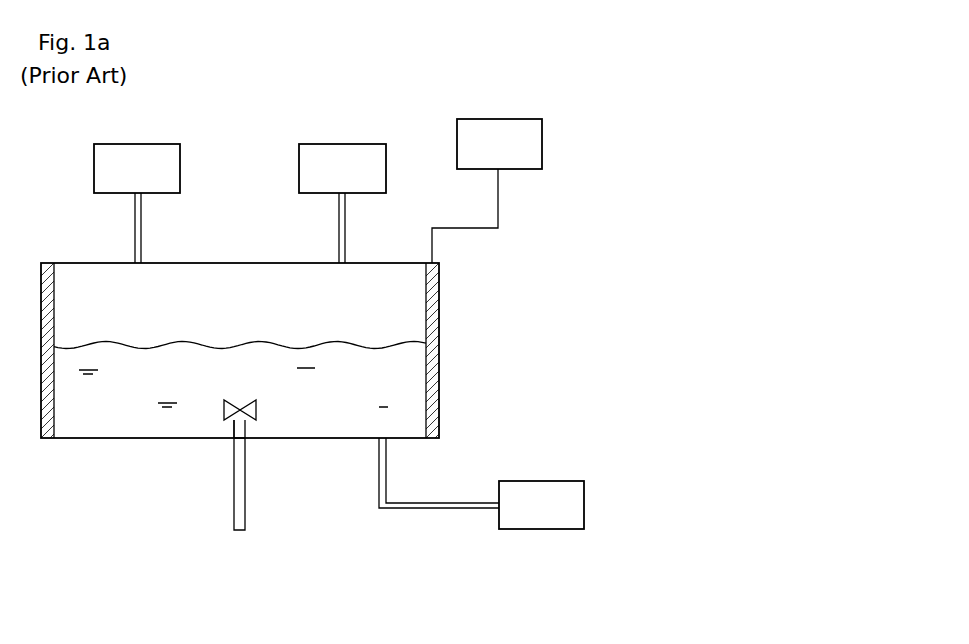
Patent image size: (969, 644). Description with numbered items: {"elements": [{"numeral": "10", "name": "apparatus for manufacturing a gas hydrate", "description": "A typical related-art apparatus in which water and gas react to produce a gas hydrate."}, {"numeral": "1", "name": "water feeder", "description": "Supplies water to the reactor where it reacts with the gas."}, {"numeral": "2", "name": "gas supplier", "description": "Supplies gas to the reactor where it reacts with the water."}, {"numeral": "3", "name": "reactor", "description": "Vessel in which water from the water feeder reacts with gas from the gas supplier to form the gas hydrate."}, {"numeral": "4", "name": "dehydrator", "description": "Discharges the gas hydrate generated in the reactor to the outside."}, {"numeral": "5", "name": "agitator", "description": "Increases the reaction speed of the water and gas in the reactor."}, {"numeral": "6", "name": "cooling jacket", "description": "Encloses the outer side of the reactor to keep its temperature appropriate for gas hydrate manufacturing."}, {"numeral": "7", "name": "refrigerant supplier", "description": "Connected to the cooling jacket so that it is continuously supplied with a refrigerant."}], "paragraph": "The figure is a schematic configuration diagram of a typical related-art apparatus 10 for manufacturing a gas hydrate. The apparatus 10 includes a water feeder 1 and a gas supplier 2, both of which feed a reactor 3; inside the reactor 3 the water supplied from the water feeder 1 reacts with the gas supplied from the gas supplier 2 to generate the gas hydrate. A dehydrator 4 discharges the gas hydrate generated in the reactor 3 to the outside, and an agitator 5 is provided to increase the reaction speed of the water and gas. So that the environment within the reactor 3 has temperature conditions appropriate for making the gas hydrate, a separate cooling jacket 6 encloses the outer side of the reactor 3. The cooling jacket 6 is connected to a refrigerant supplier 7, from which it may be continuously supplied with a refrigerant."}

The prior art system 10 is at (641, 88).
The first unit 1 is at (137, 144).
The second unit 2 is at (343, 143).
The tank 3 is at (240, 262).
The fourth unit 4 is at (542, 480).
The drain pipe with valve 5 is at (234, 484).
The tank wall 6 is at (433, 302).
The controller unit 7 is at (498, 118).